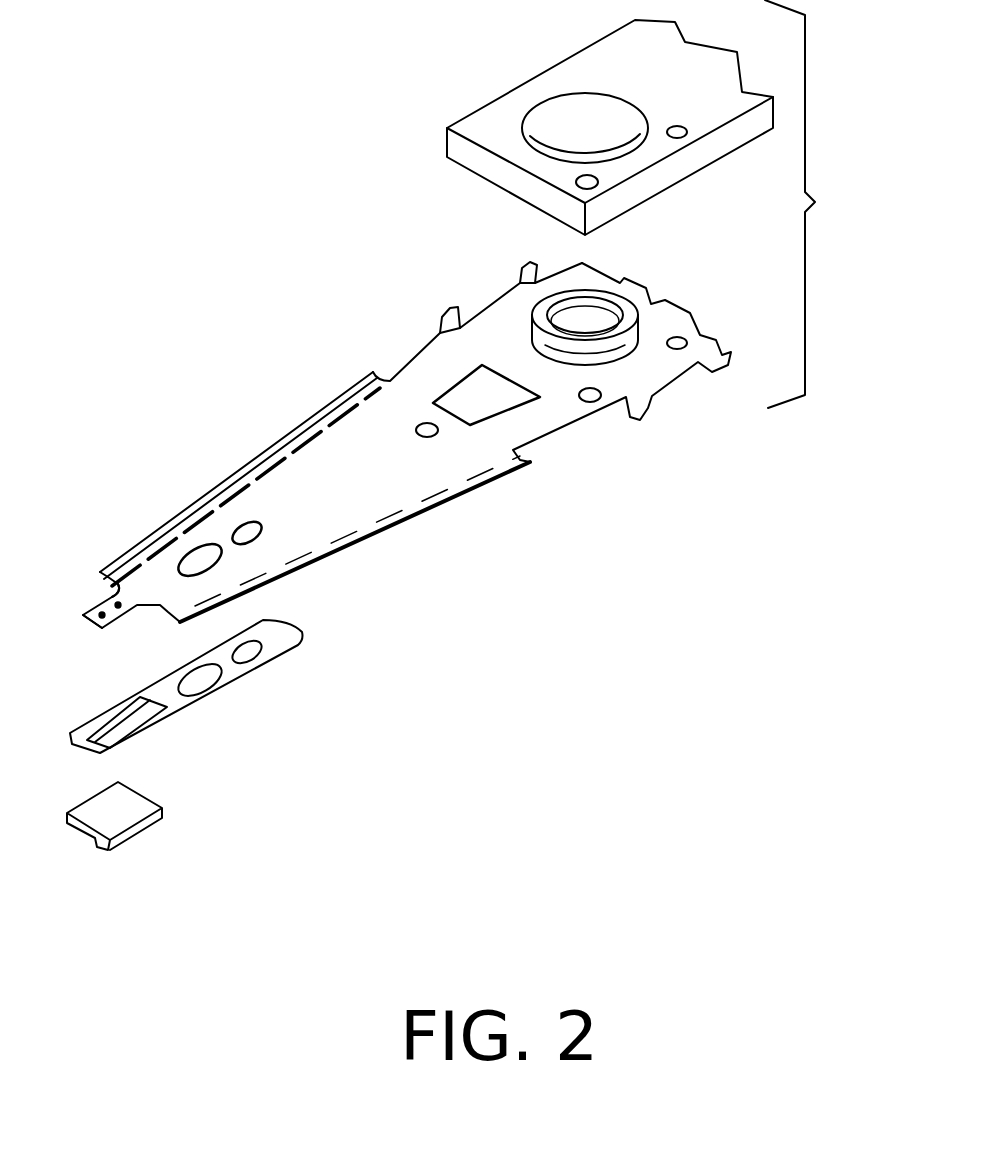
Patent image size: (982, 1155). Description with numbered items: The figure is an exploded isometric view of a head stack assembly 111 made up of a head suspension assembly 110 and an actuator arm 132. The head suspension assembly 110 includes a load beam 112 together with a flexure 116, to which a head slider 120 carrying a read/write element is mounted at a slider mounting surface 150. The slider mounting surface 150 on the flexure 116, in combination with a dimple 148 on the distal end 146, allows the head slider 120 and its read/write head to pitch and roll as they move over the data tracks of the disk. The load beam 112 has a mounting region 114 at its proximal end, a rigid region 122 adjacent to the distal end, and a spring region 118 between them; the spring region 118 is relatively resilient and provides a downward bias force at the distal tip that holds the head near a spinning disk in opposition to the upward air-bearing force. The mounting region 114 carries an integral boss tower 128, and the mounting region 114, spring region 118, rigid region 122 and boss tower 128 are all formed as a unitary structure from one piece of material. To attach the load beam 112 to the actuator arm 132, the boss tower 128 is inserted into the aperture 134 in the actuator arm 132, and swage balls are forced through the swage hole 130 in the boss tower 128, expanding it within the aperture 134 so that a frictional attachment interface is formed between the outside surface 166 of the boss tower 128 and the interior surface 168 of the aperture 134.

The head suspension assembly 110 is at (217, 193).
The head stack assembly 111 is at (819, 204).
The load beam 112 is at (397, 449).
The mounting region 114 is at (512, 312).
The flexure 116 is at (233, 696).
The spring region 118 is at (418, 379).
The head slider 120 is at (150, 850).
The rigid region 122 is at (233, 500).
The boss tower 128 is at (630, 356).
The swage hole 130 is at (610, 313).
The actuator arm 132 is at (560, 154).
The aperture 134 is at (540, 117).
The distal end 146 is at (103, 578).
The dimple 148 is at (100, 620).
The slider mounting surface 150 is at (132, 729).
The outside surface 166 is at (583, 362).
The interior surface 168 is at (624, 112).